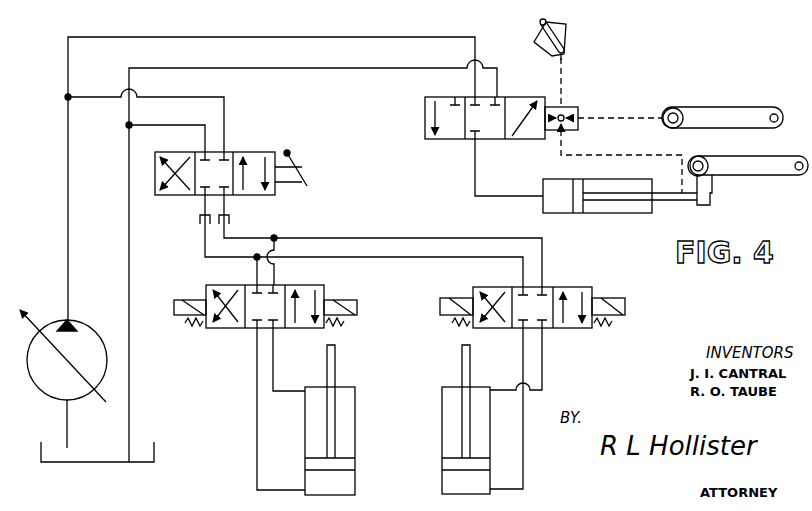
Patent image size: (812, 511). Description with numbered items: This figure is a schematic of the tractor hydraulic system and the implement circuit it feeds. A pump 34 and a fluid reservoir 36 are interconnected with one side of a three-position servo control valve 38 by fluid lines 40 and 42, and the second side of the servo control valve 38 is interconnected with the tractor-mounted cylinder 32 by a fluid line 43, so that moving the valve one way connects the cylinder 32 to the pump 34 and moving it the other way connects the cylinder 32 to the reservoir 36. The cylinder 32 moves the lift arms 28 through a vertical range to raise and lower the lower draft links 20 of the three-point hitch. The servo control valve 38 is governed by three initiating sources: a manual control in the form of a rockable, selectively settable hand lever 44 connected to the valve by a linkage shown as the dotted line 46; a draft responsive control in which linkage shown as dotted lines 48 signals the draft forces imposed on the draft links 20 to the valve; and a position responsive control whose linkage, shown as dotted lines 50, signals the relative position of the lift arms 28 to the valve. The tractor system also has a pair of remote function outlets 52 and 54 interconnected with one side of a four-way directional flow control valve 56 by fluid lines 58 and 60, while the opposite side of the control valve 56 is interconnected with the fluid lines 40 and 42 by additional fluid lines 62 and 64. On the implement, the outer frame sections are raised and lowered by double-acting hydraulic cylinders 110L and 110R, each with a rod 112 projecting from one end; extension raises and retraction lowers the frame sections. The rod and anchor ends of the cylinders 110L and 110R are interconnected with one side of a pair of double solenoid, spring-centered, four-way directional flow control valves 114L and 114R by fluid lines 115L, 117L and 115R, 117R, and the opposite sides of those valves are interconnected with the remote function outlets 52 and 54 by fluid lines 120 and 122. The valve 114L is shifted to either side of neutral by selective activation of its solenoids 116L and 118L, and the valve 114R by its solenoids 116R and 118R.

The lower draft links 20 is at (710, 110).
The lift arms 28 is at (741, 157).
The tractor-mounted cylinder 32 is at (600, 213).
The pump 34 is at (88, 322).
The fluid reservoir 36 is at (155, 446).
The three-position servo control valve 38 is at (503, 97).
The fluid line 40 is at (66, 205).
The fluid line 42 is at (129, 233).
The fluid line 43 is at (475, 168).
The hand lever 44 is at (566, 31).
The linkage 46 is at (563, 72).
The linkage 48 is at (603, 118).
The linkage 50 is at (614, 155).
The remote function outlet 52 is at (200, 226).
The remote function outlet 54 is at (229, 222).
The four-way directional flow control valve 56 is at (240, 152).
The fluid line 58 is at (204, 206).
The fluid line 60 is at (226, 206).
The fluid line 62 is at (203, 95).
The fluid line 64 is at (190, 124).
The left hydraulic cylinder 110L is at (355, 421).
The right hydraulic cylinder 110R is at (490, 430).
The rod 112 is at (335, 368).
The left solenoid directional flow control valve 114L is at (278, 286).
The right solenoid directional flow control valve 114R is at (517, 286).
The fluid line 115L is at (256, 366).
The fluid line 115R is at (522, 337).
The solenoid 116L is at (174, 307).
The solenoid 116R is at (440, 307).
The fluid line 117L is at (274, 370).
The fluid line 117R is at (542, 360).
The solenoid 118L is at (357, 306).
The solenoid 118R is at (625, 306).
The fluid line 120 is at (417, 258).
The fluid line 122 is at (420, 238).